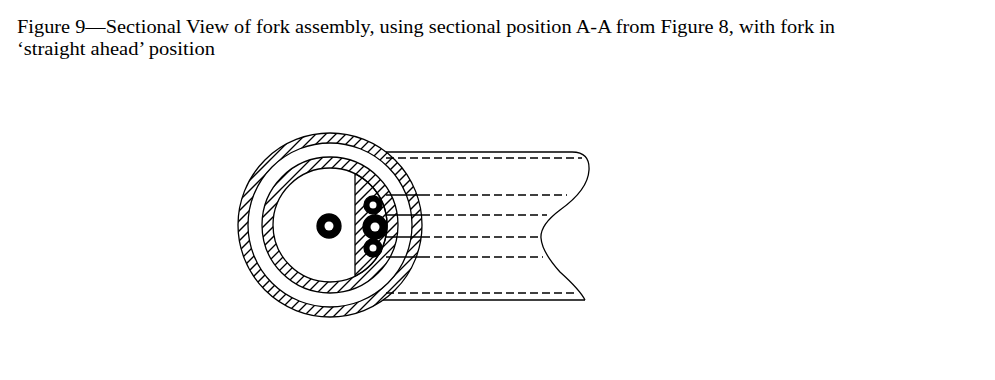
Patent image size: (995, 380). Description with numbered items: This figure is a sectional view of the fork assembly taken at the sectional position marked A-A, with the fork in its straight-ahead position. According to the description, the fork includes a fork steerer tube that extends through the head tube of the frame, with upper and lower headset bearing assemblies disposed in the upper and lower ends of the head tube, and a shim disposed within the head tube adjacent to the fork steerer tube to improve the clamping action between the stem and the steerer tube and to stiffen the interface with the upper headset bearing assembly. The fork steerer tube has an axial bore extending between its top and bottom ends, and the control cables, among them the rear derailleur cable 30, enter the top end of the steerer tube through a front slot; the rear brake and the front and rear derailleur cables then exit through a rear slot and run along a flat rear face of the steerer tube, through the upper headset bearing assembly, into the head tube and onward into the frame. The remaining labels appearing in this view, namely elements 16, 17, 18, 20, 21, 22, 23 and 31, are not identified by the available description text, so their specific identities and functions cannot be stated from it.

The inner tube 16 is at (265, 174).
The bearing plate 17 is at (373, 168).
The fork channel 18 is at (382, 295).
The pivot pin 20 is at (304, 241).
The bearing strip 21 is at (350, 205).
The bearing roller 22 is at (392, 263).
The bearing roller 23 is at (391, 184).
The rear derailleur cable 30 is at (229, 207).
The fork arm 31 is at (538, 142).